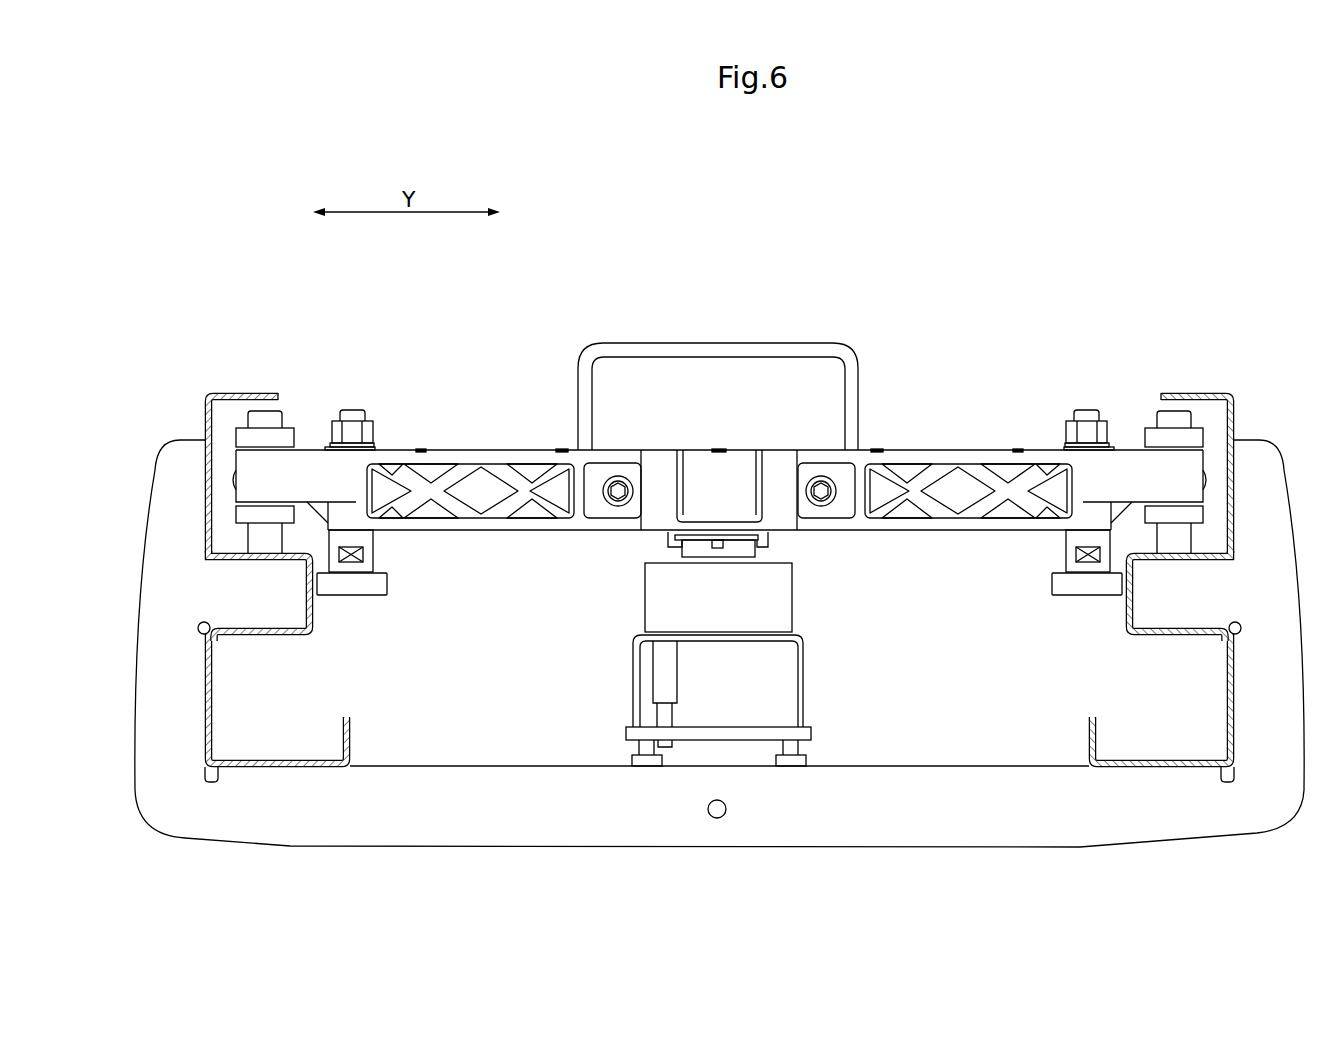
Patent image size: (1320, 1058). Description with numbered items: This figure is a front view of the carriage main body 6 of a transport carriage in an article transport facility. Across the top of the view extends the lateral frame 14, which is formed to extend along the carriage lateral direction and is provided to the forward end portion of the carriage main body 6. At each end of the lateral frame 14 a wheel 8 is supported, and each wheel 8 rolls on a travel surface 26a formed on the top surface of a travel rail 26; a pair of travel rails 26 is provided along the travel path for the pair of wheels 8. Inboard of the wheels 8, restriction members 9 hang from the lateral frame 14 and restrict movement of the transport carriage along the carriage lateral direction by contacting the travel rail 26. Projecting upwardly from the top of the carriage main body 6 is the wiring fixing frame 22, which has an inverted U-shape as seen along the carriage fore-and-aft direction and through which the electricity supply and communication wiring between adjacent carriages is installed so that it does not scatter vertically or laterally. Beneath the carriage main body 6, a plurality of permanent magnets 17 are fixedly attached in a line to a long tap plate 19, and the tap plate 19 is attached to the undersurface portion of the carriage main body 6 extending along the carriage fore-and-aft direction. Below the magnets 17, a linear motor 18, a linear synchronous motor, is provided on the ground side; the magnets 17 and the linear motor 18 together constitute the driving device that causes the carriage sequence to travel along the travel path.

The carriage main body 6 is at (968, 356).
The wheel 8 is at (247, 540).
The restriction member 9 is at (352, 583).
The lateral frame 14 is at (508, 446).
The magnet 17 is at (752, 548).
The linear motor 18 is at (645, 597).
The tap plate 19 is at (668, 540).
The wiring fixing frame 22 is at (793, 347).
The travel rail 26 is at (232, 392).
The travel surface 26a is at (232, 552).